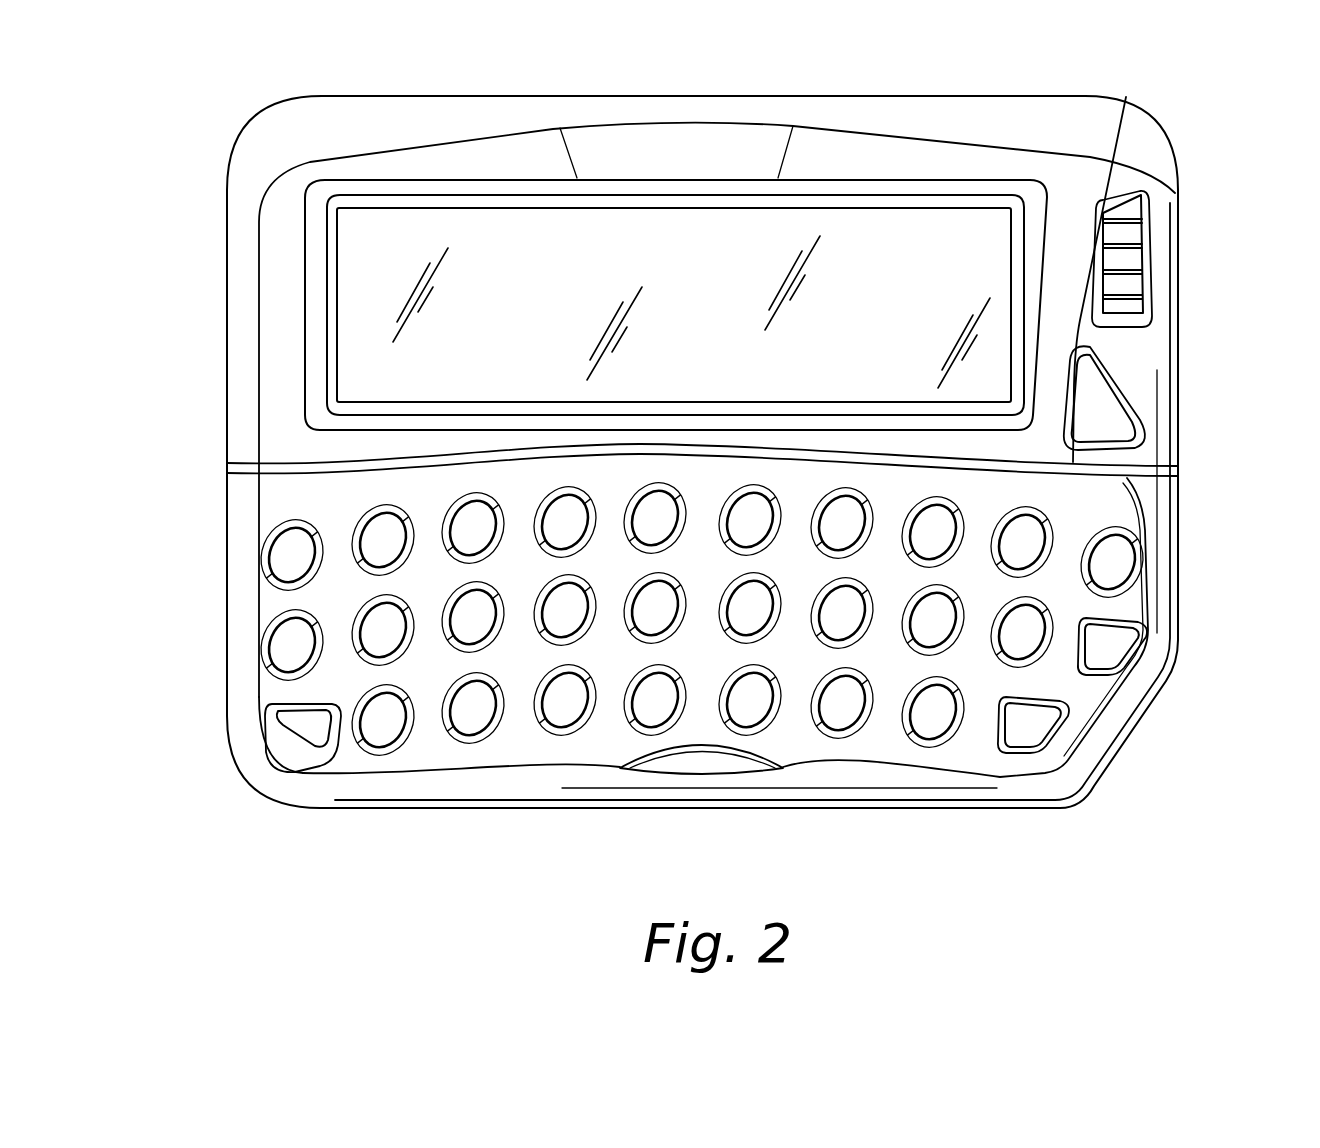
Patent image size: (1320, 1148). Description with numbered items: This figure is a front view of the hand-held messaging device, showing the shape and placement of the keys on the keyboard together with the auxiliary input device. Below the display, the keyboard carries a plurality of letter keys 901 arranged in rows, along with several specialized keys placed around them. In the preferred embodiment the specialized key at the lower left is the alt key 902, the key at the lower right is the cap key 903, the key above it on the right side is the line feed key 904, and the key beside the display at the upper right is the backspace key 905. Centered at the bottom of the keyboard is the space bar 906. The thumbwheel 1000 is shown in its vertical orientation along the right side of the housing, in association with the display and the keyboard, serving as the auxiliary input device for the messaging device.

The letter keys 901 is at (1117, 560).
The alt key 902 is at (308, 725).
The cap key 903 is at (1037, 723).
The line feed key 904 is at (1110, 647).
The backspace key 905 is at (1107, 418).
The space bar 906 is at (713, 760).
The thumbwheel 1000 is at (1137, 272).